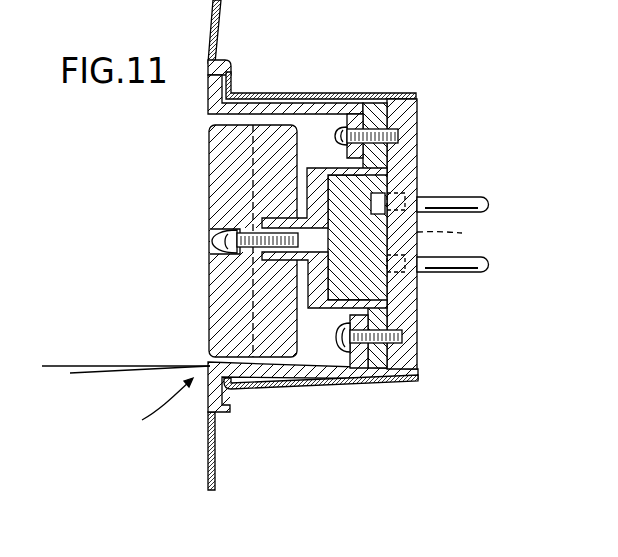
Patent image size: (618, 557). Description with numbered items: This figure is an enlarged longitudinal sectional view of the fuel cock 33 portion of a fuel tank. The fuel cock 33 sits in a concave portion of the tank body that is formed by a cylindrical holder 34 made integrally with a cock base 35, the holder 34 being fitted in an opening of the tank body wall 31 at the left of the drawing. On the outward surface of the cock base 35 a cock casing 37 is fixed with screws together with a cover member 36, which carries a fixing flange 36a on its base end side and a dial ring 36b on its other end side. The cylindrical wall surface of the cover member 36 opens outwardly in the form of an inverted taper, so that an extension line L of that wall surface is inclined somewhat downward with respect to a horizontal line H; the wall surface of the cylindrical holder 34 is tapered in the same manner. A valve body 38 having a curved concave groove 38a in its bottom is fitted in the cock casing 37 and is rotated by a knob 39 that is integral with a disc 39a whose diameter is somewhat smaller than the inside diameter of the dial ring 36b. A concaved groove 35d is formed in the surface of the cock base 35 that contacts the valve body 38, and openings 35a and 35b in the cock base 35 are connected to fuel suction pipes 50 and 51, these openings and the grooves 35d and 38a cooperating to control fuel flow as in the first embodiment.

The wall 31 is at (211, 22).
The fuel cock 33 is at (154, 406).
The cylindrical holder 34 is at (342, 93).
The cock base 35 is at (410, 108).
The opening 35a is at (408, 197).
The opening 35b is at (420, 268).
The concaved groove 35d is at (462, 232).
The cover member 36 is at (290, 375).
The fixing flange 36a is at (357, 377).
The dial ring 36b is at (213, 390).
The cock casing 37 is at (323, 308).
The valve body 38 is at (405, 280).
The curved concave groove 38a is at (383, 180).
The knob 39 is at (210, 295).
The disc 39a is at (253, 183).
The fuel suction pipe 50 is at (470, 203).
The fuel suction pipe 51 is at (468, 270).
The horizontal line H is at (115, 364).
The extension line L is at (133, 379).